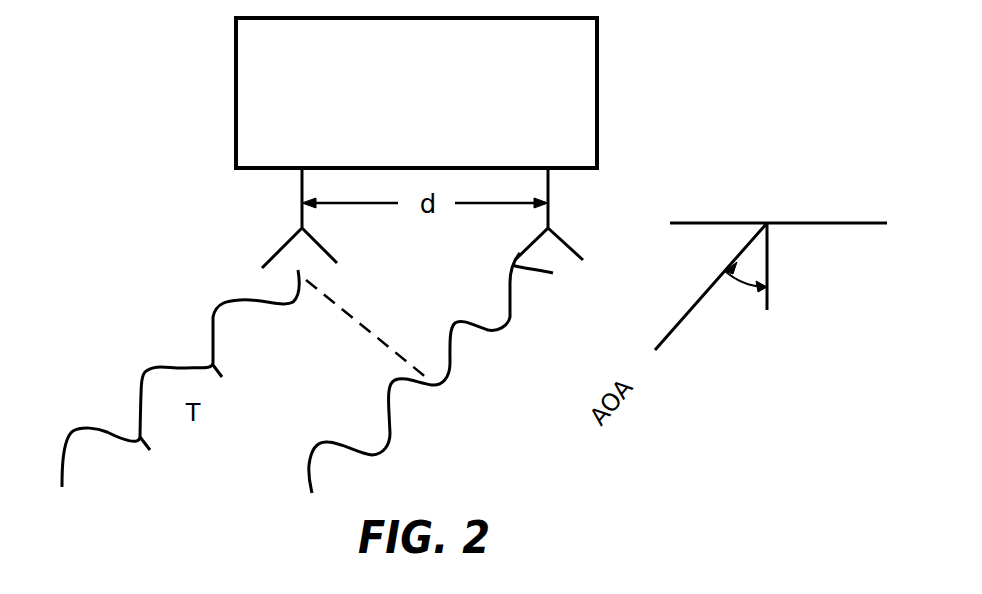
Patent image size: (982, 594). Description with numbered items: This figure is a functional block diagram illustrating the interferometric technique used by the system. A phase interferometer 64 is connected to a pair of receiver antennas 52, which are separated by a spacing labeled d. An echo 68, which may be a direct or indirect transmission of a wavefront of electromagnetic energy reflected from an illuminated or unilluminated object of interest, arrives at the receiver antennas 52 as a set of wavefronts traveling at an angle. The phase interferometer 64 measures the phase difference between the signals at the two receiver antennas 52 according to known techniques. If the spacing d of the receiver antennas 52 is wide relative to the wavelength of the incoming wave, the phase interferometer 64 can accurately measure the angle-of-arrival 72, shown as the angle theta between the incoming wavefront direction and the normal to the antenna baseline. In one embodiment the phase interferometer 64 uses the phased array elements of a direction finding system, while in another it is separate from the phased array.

The phase interferometer 64 is at (598, 132).
The receiver antennas 52 is at (282, 248).
The echo 68 is at (77, 425).
The angle-of-arrival 72 is at (735, 332).